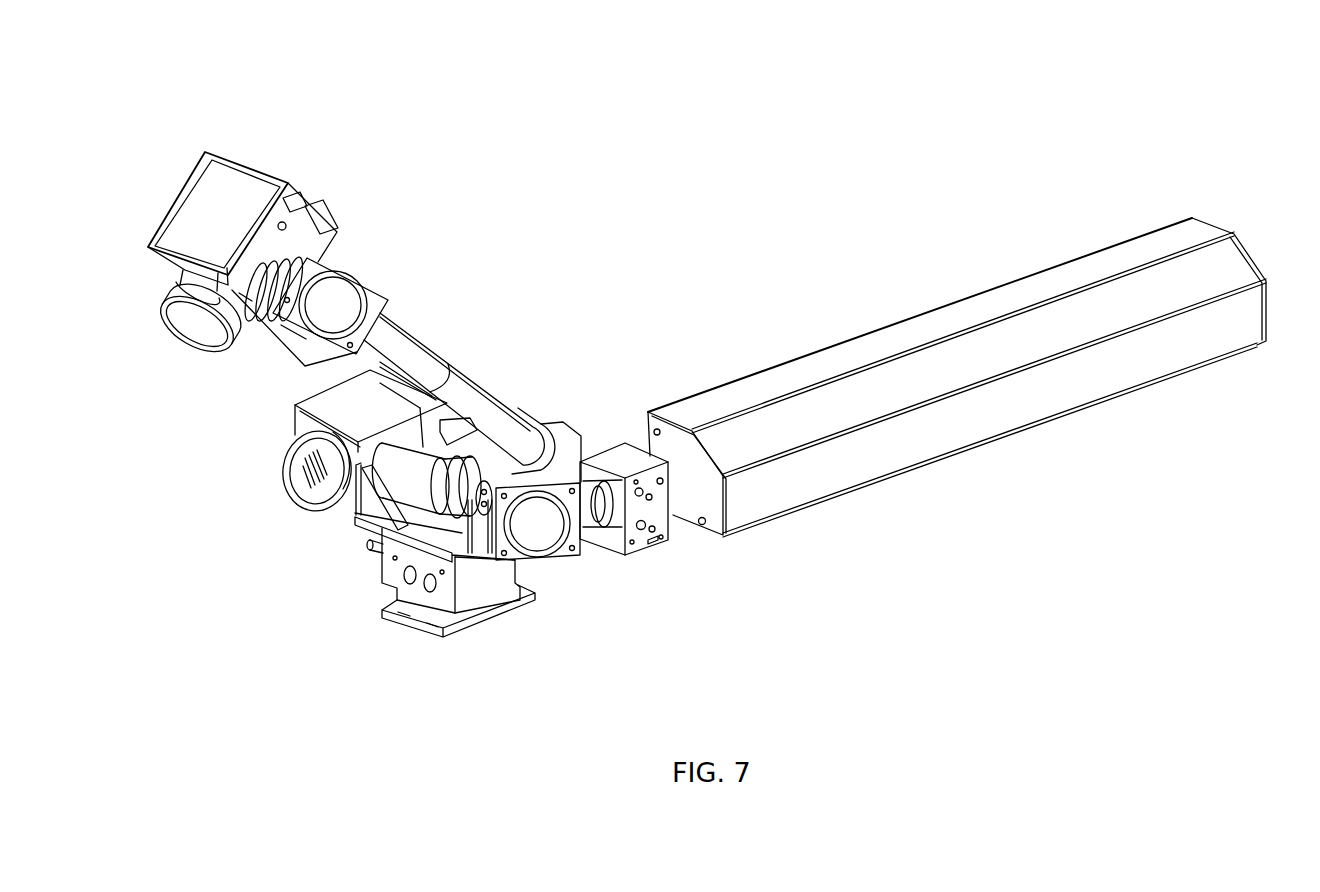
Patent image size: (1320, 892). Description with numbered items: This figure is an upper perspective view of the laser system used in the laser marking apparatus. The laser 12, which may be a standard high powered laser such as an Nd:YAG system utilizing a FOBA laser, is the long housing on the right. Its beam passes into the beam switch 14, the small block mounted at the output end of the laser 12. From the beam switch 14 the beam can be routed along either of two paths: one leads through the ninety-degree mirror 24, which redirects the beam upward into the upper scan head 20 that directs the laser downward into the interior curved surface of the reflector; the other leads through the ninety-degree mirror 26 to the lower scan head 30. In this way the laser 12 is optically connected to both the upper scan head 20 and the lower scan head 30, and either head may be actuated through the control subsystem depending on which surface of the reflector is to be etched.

The laser 12 is at (1104, 385).
The beam switch 14 is at (645, 547).
The upper scan head 20 is at (236, 190).
The 90° mirror 24 is at (340, 297).
The 90° mirror 26 is at (548, 548).
The lower scan head 30 is at (300, 413).